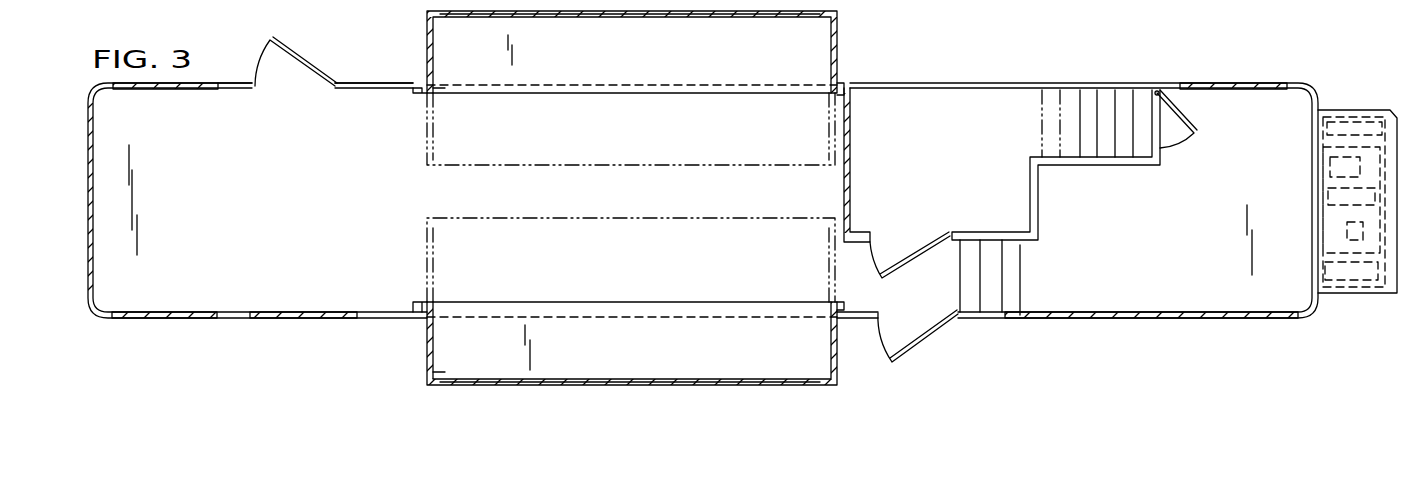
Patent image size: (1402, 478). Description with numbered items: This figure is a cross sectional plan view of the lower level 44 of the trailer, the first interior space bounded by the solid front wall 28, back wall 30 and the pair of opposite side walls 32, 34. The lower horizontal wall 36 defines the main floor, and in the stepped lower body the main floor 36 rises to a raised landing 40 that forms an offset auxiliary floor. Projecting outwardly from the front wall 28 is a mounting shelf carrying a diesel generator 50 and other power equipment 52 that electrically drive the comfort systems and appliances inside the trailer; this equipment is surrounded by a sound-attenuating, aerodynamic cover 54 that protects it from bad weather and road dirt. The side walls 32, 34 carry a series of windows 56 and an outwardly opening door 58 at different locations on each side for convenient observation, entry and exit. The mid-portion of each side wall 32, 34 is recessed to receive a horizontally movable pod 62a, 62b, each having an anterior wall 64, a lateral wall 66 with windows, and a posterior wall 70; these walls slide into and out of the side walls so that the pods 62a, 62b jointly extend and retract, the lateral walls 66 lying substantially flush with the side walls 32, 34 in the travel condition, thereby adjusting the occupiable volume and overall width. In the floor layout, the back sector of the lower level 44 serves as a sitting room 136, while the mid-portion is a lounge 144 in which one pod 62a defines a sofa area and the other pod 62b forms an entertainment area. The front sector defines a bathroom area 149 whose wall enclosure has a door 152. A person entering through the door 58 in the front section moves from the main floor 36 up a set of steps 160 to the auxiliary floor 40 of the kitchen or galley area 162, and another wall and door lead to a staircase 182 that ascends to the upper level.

The front wall 28 is at (1317, 297).
The back wall 30 is at (93, 240).
The side wall 32 is at (412, 320).
The side wall 34 is at (375, 82).
The lower horizontal wall 36 is at (395, 217).
The raised landing 40 is at (1262, 183).
The lower level 44 is at (643, 272).
The diesel generator 50 is at (1330, 198).
The power equipment 52 is at (1333, 170).
The aerodynamic cover 54 is at (1393, 116).
The windows 56 is at (205, 90).
The door 58 is at (318, 53).
The movable pod 62a is at (671, 396).
The movable pod 62b is at (719, 30).
The anterior wall 64 is at (838, 72).
The lateral wall 66 is at (562, 17).
The posterior wall 70 is at (436, 72).
The sitting room 136 is at (233, 265).
The lounge 144 is at (568, 197).
The bathroom area 149 is at (917, 115).
The door 152 is at (903, 255).
The steps 160 is at (1018, 298).
The kitchen 162 is at (1168, 245).
The staircase 182 is at (1122, 88).